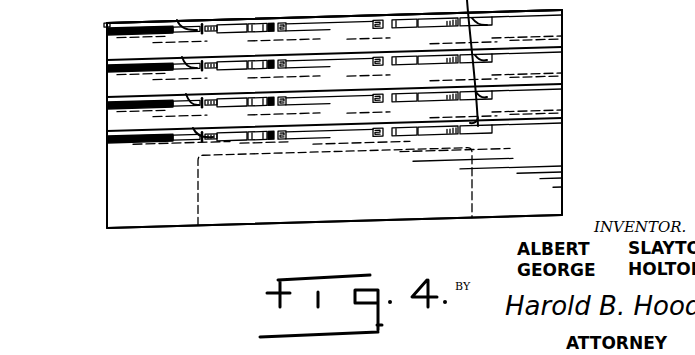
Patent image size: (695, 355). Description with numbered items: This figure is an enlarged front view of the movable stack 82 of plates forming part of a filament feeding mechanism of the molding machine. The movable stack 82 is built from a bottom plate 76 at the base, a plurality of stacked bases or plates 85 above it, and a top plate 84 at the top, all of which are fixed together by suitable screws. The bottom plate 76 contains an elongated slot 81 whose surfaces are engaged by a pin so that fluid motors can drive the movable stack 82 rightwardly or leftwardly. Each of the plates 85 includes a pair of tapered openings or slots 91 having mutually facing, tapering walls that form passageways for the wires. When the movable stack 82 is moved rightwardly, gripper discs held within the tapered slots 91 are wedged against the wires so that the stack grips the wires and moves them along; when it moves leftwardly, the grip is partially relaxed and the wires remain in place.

The bottom plate 76 is at (127, 190).
The elongated slot 81 is at (244, 156).
The movable stack 82 is at (575, 72).
The top plate 84 is at (104, 25).
The stacked bases or plates 85 is at (115, 121).
The tapered openings or slots 91 is at (197, 138).